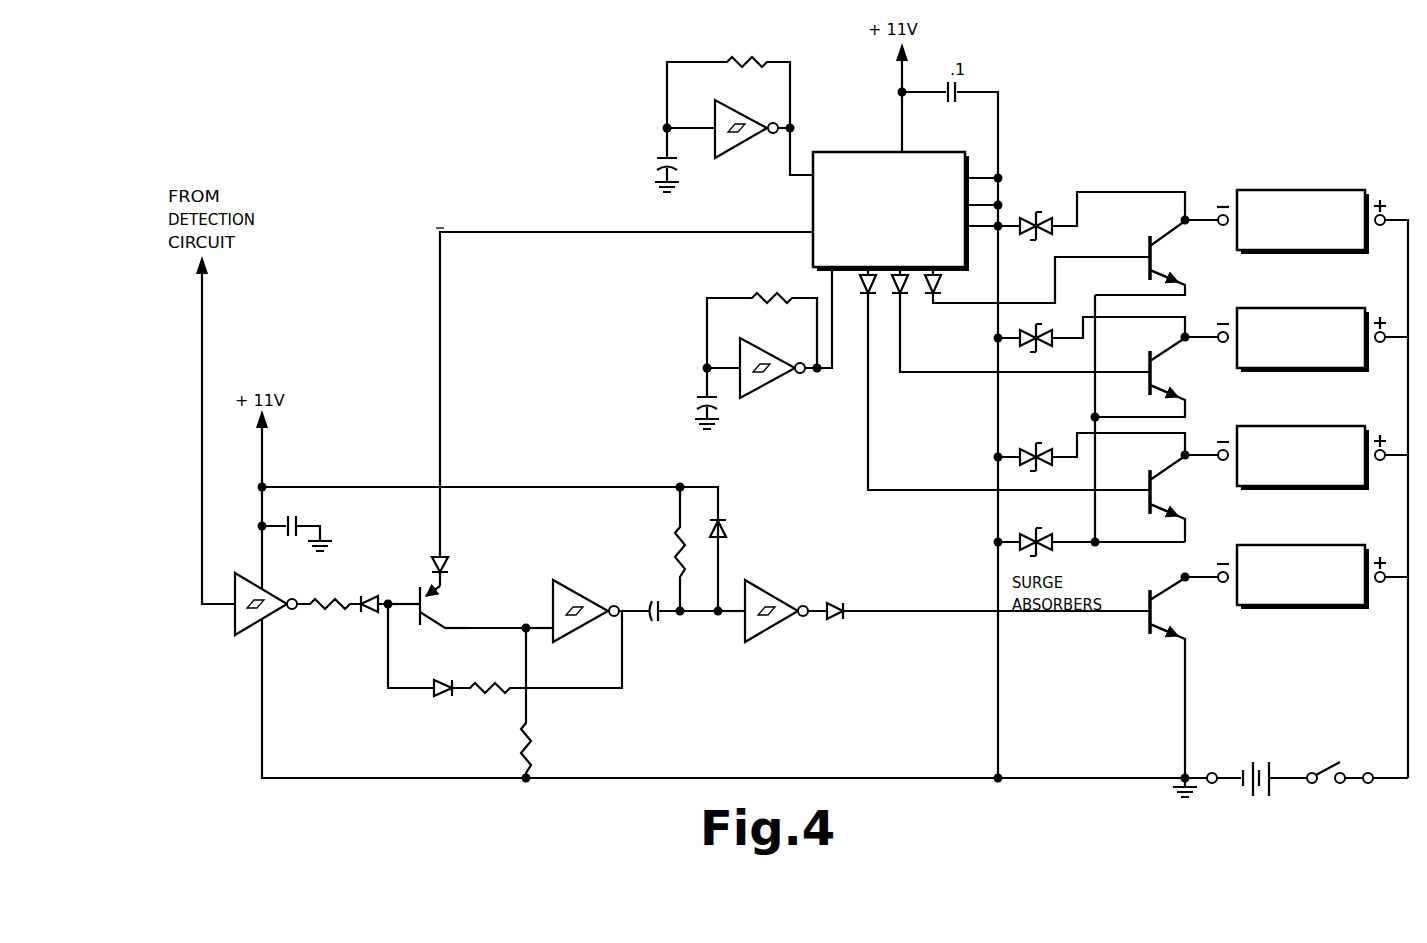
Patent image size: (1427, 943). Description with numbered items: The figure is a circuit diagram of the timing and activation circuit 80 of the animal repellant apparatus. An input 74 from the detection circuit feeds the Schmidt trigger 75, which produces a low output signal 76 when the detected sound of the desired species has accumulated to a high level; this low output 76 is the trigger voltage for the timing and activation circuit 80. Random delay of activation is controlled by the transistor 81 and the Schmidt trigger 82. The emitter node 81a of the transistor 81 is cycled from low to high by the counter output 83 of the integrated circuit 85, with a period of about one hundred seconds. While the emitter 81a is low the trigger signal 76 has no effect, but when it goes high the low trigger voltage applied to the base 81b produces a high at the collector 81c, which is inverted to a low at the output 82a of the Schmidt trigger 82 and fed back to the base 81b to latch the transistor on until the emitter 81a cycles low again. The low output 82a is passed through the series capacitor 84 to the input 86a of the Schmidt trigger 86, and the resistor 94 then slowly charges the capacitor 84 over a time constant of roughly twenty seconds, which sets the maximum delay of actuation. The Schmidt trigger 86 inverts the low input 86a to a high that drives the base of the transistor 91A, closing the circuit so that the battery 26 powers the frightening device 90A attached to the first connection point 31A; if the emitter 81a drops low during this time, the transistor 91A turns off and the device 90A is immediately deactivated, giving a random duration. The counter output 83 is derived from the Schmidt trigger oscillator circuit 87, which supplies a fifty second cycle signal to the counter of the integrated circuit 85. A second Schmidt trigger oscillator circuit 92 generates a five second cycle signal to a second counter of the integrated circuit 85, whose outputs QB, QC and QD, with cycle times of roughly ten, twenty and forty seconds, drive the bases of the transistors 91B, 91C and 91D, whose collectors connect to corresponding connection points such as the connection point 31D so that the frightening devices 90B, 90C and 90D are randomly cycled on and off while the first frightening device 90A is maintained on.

The battery 26 is at (1268, 771).
The first connection point 31A is at (1296, 593).
The connection point 31D is at (1306, 470).
The input line from detection circuit 74 is at (215, 430).
The Schmidt trigger 75 is at (245, 641).
The low output signal 76 is at (294, 625).
The timing and activation circuit 80 is at (413, 194).
The transistor 81 is at (473, 592).
The emitter node 81a is at (421, 561).
The base 81b is at (393, 586).
The collector 81c is at (447, 647).
The Schmidt trigger 82 is at (567, 599).
The output 82a is at (617, 590).
The counter output 83 is at (626, 375).
The series capacitor 84 is at (649, 628).
The integrated circuit 85 is at (981, 307).
The Schmidt trigger 86 is at (744, 599).
The input 86a is at (728, 641).
The Schmidt trigger oscillator circuit 87 is at (707, 124).
The frightening device 90A is at (1303, 563).
The frightening device 90B is at (1303, 444).
The frightening device 90C is at (1303, 326).
The frightening device 90D is at (1303, 208).
The transistor 91A is at (1154, 674).
The transistor 91B is at (1146, 499).
The transistor 91C is at (1140, 377).
The transistor 91D is at (1140, 258).
The second Schmidt trigger oscillator circuit 92 is at (731, 348).
The resistor 94 is at (667, 549).